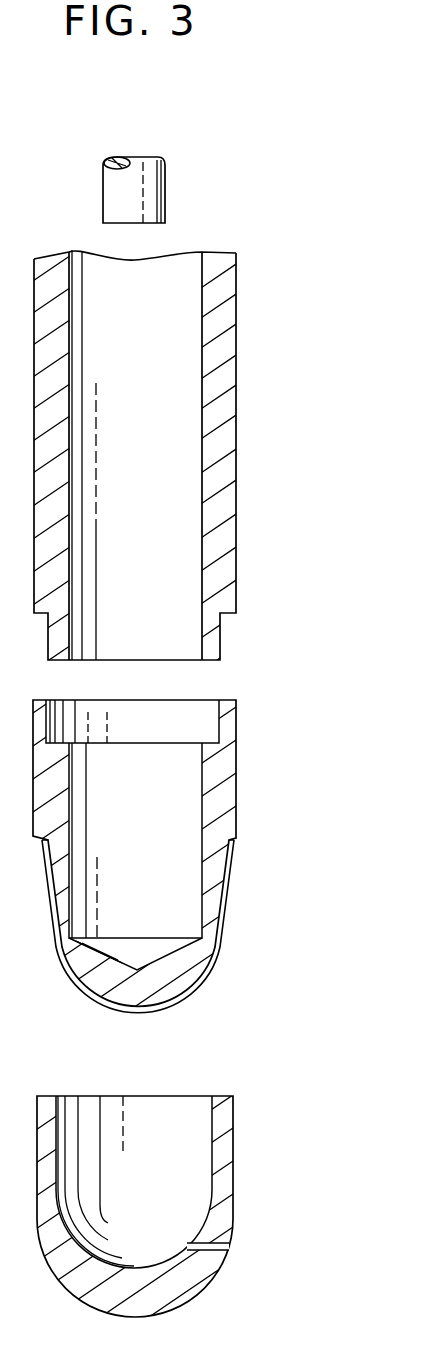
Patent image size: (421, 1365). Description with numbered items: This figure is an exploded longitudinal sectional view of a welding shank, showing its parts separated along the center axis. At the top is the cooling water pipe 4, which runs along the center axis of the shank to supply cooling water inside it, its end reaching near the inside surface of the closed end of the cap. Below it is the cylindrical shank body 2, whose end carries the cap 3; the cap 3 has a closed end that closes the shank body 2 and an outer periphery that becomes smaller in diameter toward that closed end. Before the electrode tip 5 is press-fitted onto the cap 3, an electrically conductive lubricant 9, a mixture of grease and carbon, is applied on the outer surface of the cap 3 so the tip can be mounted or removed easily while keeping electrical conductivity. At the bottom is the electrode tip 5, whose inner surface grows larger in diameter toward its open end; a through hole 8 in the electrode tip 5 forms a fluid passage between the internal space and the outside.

The shank body 2 is at (218, 441).
The cap 3 is at (205, 968).
The cooling water pipe 4 is at (150, 190).
The electrode tip 5 is at (200, 1290).
The through hole 8 is at (230, 1246).
The electrically conductive lubricant 9 is at (220, 912).